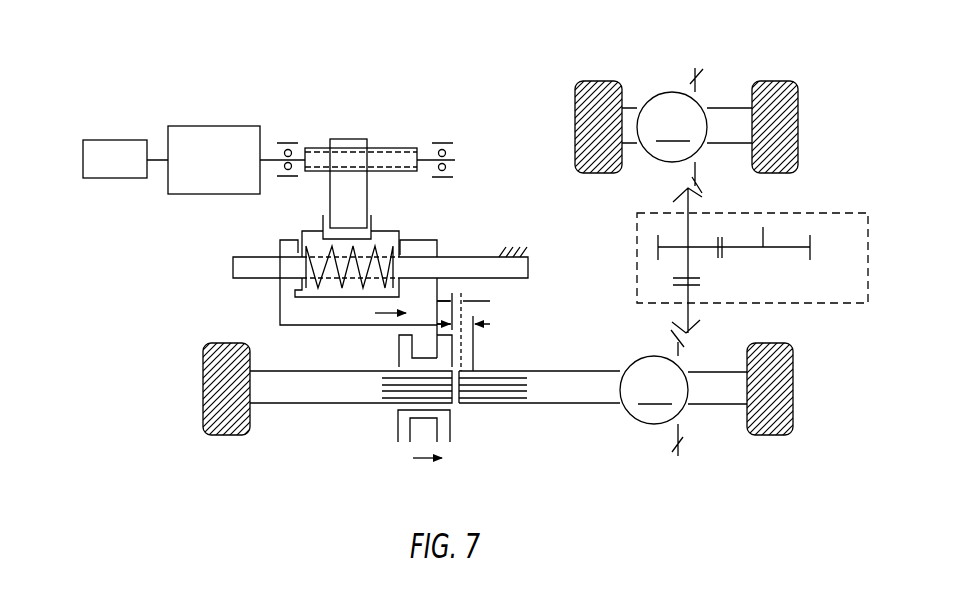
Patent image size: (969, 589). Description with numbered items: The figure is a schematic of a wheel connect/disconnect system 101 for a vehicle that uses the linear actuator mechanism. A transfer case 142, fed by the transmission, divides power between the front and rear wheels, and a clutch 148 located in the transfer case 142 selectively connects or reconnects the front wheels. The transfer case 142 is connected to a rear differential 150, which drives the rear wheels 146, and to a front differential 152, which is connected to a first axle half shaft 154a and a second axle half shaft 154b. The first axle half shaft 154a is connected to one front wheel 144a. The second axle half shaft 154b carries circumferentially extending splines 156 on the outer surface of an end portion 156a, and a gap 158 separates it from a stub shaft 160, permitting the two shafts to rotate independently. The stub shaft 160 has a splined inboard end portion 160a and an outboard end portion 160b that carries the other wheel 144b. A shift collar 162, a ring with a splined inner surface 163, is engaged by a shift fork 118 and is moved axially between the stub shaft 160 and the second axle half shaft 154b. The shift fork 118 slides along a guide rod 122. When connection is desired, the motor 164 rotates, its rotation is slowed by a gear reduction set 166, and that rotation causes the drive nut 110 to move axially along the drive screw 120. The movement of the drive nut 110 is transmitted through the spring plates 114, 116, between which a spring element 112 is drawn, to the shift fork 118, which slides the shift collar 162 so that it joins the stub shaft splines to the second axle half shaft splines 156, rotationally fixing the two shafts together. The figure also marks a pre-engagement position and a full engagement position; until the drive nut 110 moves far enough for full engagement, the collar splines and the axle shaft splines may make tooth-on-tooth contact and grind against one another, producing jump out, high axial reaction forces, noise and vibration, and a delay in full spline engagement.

The wheel connect/disconnect system 101 is at (70, 99).
The motor 164 is at (115, 140).
The gear reduction set 166 is at (211, 126).
The drive nut 110 is at (337, 142).
The drive screw 120 is at (403, 149).
The spring plate 114 is at (301, 232).
The spring plate 116 is at (373, 252).
The spring 112 is at (390, 236).
The guide rod 122 is at (234, 263).
The shift fork 118 is at (279, 296).
The splined inner surface 163 is at (456, 405).
The stub shaft 160 is at (298, 404).
The outboard end portion 160b is at (263, 378).
The inboard end portion 160a is at (449, 443).
The shift collar 162 is at (393, 422).
The splines 156 is at (487, 405).
The end portion 156a is at (461, 405).
The gap 158 is at (459, 372).
The second axle half shaft 154b is at (590, 405).
The first axle half shaft 154a is at (713, 406).
The front differential 152 is at (654, 390).
The rear differential 150 is at (687, 127).
The front wheel 144a is at (777, 436).
The wheel 144b is at (222, 436).
The rear wheels 146 is at (576, 106).
The transfer case 142 is at (868, 250).
The clutch 148 is at (704, 282).